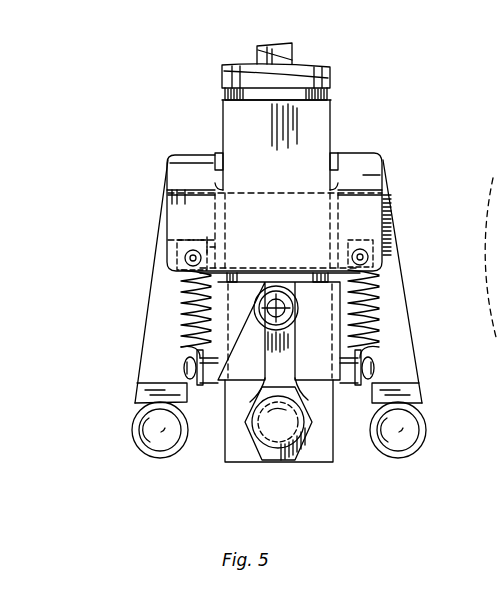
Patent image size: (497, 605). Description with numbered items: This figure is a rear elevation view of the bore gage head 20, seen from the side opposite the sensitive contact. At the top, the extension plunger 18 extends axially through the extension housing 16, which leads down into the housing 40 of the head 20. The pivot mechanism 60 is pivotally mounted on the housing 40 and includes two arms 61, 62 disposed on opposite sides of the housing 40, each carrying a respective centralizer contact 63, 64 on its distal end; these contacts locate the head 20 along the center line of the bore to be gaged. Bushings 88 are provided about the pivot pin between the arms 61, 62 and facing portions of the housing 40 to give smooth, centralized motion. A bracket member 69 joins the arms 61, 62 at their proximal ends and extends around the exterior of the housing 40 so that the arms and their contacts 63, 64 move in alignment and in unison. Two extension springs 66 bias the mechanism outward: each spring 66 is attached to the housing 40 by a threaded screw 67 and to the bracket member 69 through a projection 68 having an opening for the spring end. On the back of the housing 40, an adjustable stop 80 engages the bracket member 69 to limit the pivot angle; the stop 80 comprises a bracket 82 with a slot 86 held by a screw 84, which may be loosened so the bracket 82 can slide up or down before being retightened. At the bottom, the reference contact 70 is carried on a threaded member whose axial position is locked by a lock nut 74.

The bore gage head 20 is at (118, 170).
The extension plunger 18 is at (293, 53).
The extension housing 16 is at (331, 84).
The housing 40 is at (334, 118).
The bushings 88 is at (215, 152).
The pivot mechanism 60 is at (168, 157).
The bracket member 69 is at (237, 222).
The projections 68 is at (180, 250).
The adjustable stop 80 is at (255, 273).
The screw 84 is at (273, 287).
The bracket 82 is at (318, 277).
The slot 86 is at (290, 375).
The lock nut 74 is at (313, 437).
The reference contact 70 is at (285, 432).
The arm 61 is at (150, 323).
The arm 62 is at (408, 327).
The extension springs 66 is at (183, 303).
The threaded screws 67 is at (182, 363).
The centralizer contact 63 is at (147, 452).
The centralizer contact 64 is at (415, 450).